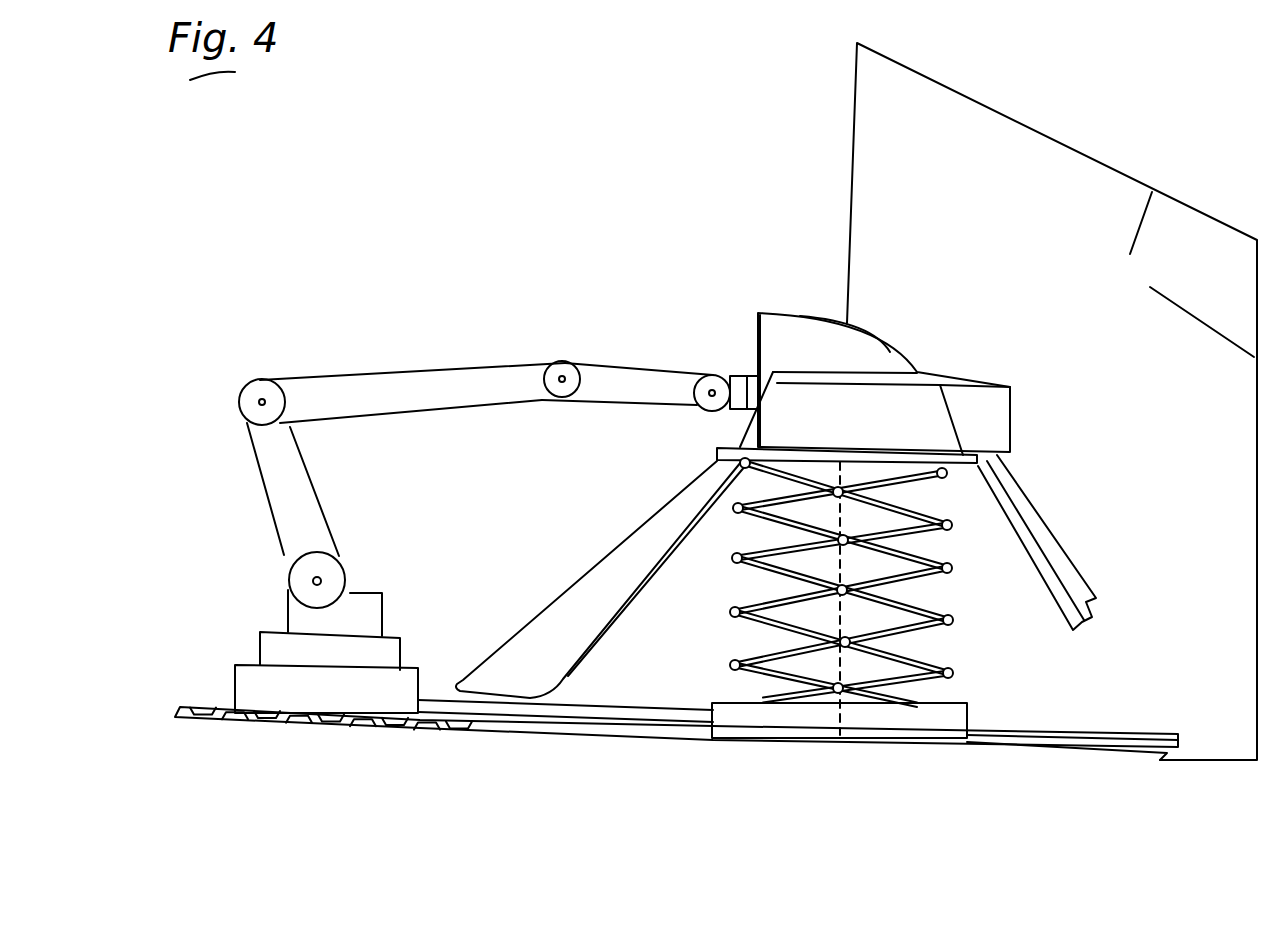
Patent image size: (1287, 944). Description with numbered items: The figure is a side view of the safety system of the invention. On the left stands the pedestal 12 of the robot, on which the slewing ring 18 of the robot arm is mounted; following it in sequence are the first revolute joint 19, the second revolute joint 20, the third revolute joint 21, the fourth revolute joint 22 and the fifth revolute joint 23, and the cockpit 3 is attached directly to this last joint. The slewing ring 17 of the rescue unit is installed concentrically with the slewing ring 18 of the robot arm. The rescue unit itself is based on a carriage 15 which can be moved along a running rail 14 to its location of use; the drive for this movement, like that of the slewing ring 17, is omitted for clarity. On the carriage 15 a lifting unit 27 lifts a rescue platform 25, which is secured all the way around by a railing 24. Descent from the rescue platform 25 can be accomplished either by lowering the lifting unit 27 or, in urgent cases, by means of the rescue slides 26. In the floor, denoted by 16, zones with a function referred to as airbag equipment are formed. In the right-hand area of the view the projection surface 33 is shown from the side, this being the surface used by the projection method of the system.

The cockpit 3 is at (990, 405).
The pedestal 12 is at (272, 646).
The running rail 14 is at (1037, 733).
The carriage 15 is at (810, 723).
The floor with airbag equipment zones 16 is at (353, 723).
The slewing ring of the rescue unit 17 is at (237, 683).
The slewing ring of the robot arm 18 is at (295, 612).
The first revolute joint 19 is at (333, 573).
The second revolute joint 20 is at (250, 393).
The third revolute joint 21 is at (570, 363).
The fourth revolute joint 22 is at (713, 375).
The fifth revolute joint 23 is at (749, 383).
The railing 24 is at (970, 380).
The rescue platform 25 is at (977, 462).
The rescue slides 26 is at (640, 535).
The lifting unit 27 is at (952, 623).
The projection surface 33 is at (1070, 213).